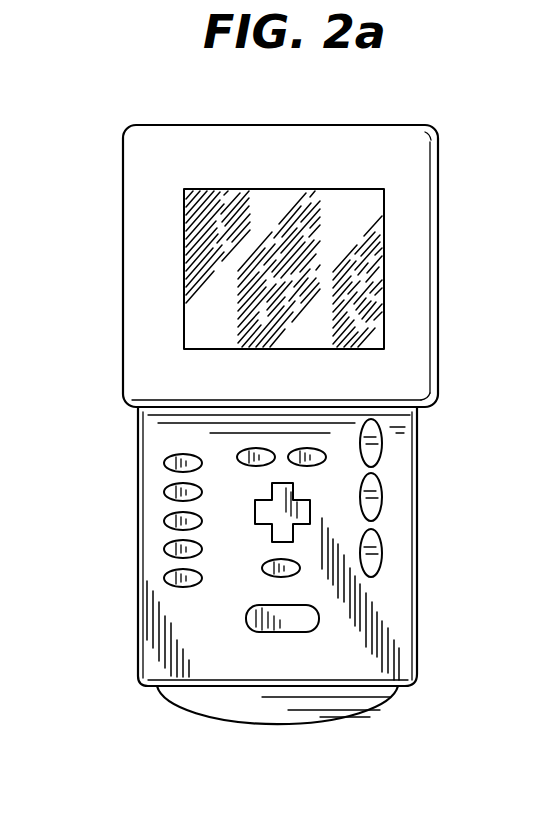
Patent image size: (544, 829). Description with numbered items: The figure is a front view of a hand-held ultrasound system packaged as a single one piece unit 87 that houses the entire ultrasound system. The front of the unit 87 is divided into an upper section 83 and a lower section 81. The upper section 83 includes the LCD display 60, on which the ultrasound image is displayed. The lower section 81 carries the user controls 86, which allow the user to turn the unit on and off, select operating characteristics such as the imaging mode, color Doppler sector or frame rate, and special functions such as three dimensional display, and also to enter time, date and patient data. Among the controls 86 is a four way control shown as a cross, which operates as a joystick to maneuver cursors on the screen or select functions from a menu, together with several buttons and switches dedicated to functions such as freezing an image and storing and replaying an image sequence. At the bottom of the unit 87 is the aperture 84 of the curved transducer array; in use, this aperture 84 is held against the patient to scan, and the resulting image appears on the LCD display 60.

The LCD display 60 is at (338, 189).
The lower section 81 is at (130, 523).
The upper section 83 is at (112, 385).
The aperture 84 is at (232, 728).
The user controls 86 is at (190, 625).
The one piece unit 87 is at (417, 475).